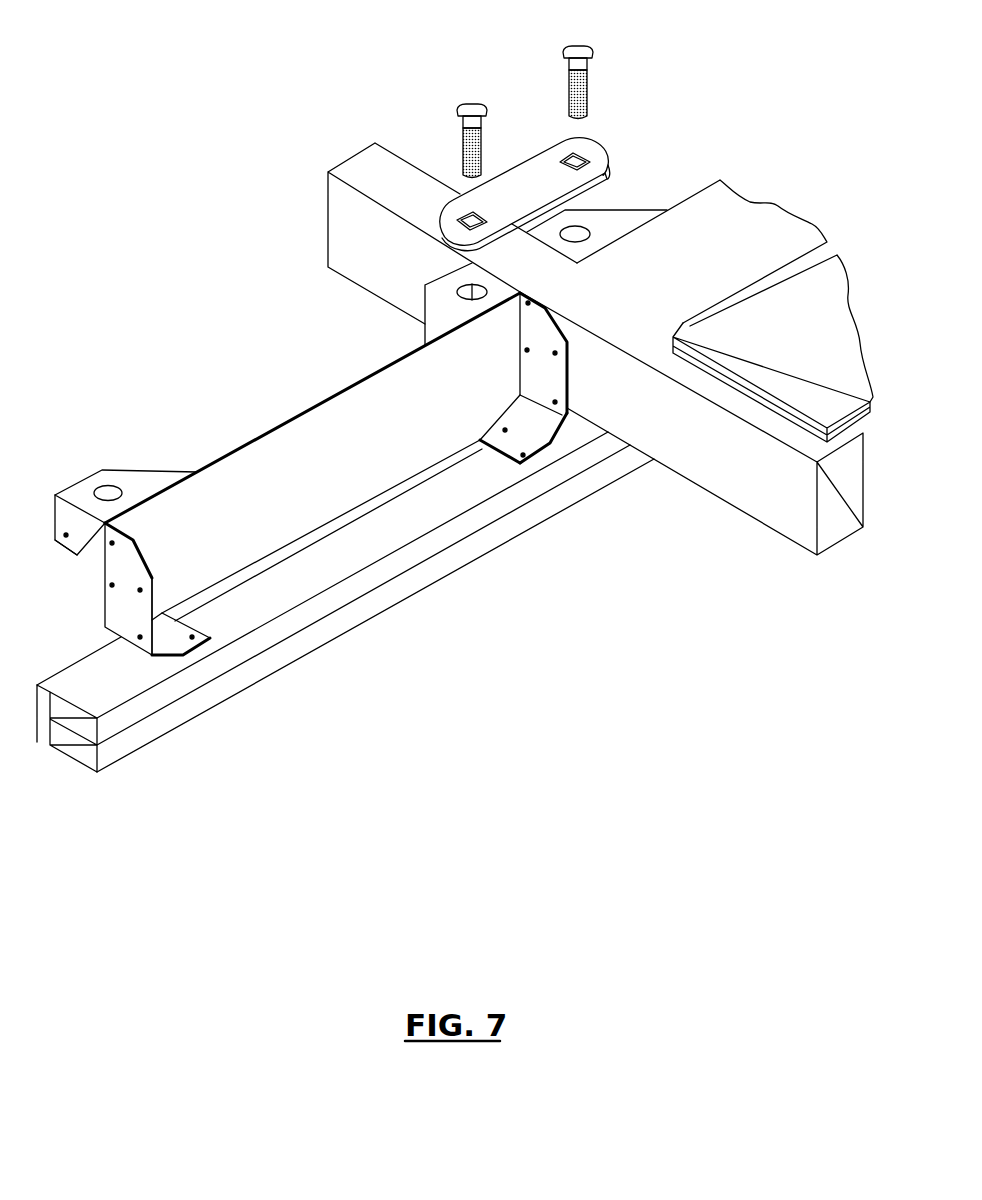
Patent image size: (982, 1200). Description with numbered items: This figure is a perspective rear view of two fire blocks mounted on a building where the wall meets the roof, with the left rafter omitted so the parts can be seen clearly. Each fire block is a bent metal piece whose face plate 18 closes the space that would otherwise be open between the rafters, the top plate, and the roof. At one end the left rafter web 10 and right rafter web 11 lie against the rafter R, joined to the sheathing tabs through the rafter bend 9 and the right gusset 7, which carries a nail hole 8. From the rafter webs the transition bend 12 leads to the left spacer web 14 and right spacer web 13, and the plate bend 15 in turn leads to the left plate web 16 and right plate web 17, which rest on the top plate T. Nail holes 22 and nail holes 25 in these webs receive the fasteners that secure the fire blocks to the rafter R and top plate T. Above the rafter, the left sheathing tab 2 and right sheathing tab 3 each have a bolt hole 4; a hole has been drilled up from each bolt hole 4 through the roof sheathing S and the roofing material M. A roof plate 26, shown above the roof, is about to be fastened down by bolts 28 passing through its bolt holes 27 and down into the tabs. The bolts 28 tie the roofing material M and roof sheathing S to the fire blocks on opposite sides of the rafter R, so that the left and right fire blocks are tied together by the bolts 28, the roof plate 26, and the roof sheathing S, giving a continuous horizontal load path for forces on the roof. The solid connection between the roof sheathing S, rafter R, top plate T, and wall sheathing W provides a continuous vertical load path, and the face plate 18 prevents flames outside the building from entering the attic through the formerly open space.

The left sheathing tab 2 is at (462, 276).
The right sheathing tab 3 is at (102, 470).
The bolt hole 4 is at (107, 485).
The right gusset 7 is at (77, 556).
The nail hole 8 is at (66, 528).
The rafter bend 9 is at (117, 612).
The left rafter web 10 is at (553, 378).
The right rafter web 11 is at (105, 628).
The transition bend 12 is at (563, 408).
The right spacer web 13 is at (162, 657).
The left spacer web 14 is at (552, 426).
The plate bend 15 is at (600, 455).
The left plate web 16 is at (532, 462).
The right plate web 17 is at (194, 641).
The face plate 18 is at (720, 202).
The nail holes 22 is at (210, 640).
The nail holes 25 is at (532, 302).
The roof plate 26 is at (608, 162).
The bolt holes 27 is at (462, 218).
The bolt 28 is at (464, 104).
The rafters R is at (785, 512).
The roof sheathing S is at (755, 397).
The roofing material M is at (803, 412).
The top plate T is at (620, 472).
The wall sheathing W is at (43, 738).